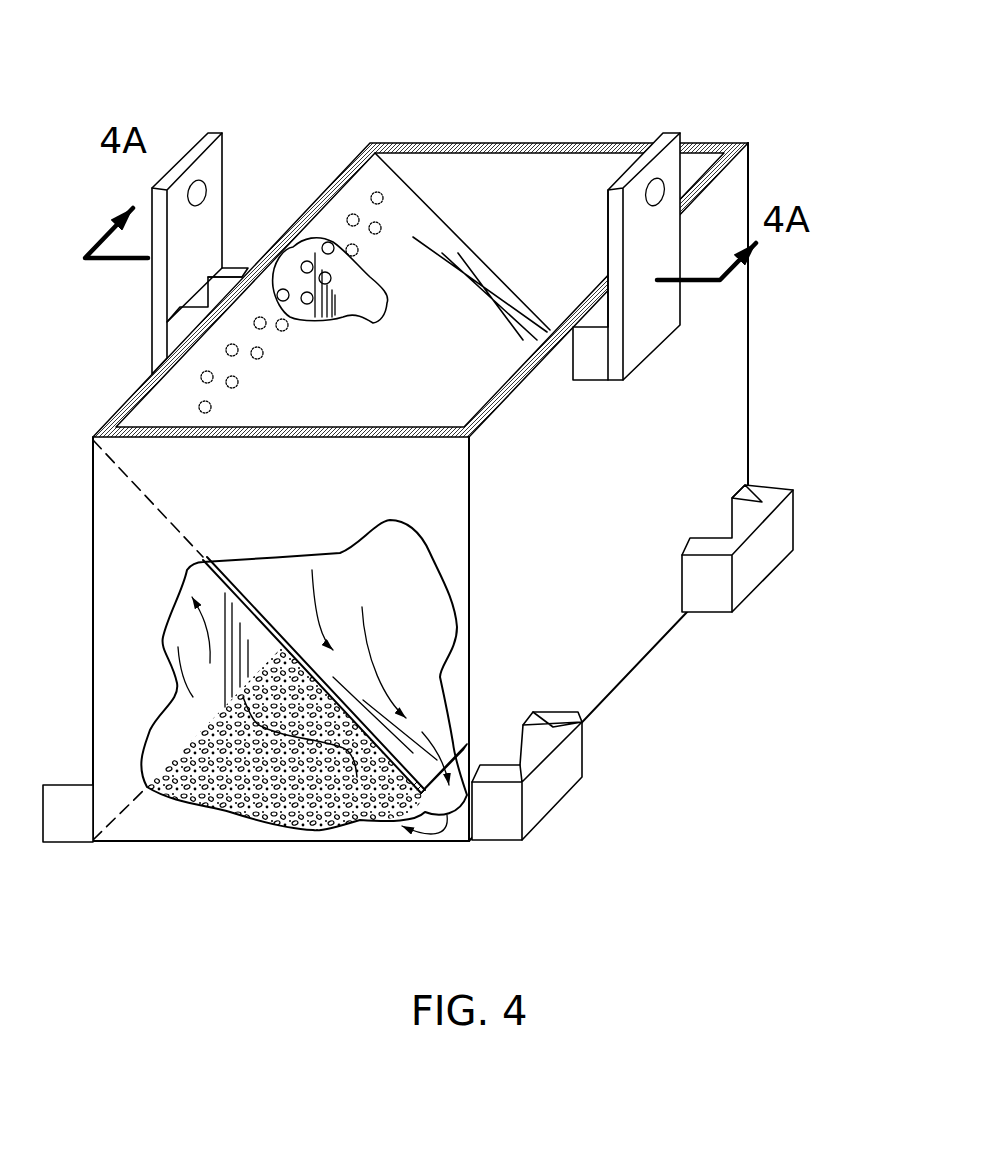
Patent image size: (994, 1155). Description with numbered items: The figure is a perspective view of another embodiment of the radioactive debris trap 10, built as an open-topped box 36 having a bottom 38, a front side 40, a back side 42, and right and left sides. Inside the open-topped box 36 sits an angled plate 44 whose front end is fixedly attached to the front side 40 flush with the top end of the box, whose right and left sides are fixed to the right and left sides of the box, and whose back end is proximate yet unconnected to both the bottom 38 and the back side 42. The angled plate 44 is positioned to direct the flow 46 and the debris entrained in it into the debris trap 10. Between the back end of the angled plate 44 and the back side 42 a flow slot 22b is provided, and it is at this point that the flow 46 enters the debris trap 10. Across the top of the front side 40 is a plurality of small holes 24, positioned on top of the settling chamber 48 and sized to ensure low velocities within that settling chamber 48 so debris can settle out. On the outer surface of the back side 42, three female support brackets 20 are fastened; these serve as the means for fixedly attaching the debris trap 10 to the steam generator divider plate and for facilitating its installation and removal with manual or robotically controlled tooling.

The debris trap 10 is at (624, 799).
The female support brackets 20 is at (150, 337).
The flow slot 22b is at (450, 815).
The small holes 24 is at (352, 244).
The open-topped box 36 is at (434, 122).
The bottom 38 is at (270, 843).
The front side 40 is at (131, 392).
The back side 42 is at (522, 553).
The angled plate 44 is at (297, 660).
The flow 46 is at (373, 673).
The settling chamber 48 is at (213, 659).